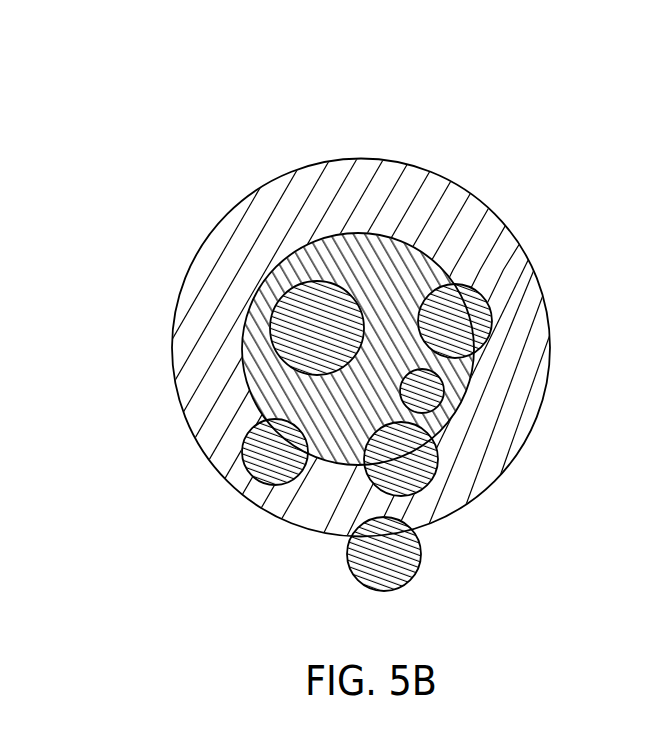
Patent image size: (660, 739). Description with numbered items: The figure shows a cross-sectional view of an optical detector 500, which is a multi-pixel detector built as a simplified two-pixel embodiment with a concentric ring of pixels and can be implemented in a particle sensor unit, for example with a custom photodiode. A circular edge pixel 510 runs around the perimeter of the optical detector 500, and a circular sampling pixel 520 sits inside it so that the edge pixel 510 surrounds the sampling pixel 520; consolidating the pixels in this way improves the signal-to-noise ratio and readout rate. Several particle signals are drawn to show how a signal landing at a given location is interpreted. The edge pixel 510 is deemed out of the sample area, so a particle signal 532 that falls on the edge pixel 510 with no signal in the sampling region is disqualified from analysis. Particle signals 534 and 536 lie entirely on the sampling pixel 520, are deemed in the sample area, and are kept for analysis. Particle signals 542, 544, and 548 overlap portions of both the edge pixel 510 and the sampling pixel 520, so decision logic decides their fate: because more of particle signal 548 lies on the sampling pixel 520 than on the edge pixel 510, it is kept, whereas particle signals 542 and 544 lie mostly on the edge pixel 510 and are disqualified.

The optical detector 500 is at (380, 122).
The edge pixel 510 is at (243, 232).
The sampling pixel 520 is at (385, 272).
The particle signal 532 is at (407, 560).
The particle signal 534 is at (298, 322).
The particle signal 536 is at (440, 397).
The particle signal 542 is at (413, 470).
The particle signal 544 is at (260, 473).
The particle signal 548 is at (480, 322).